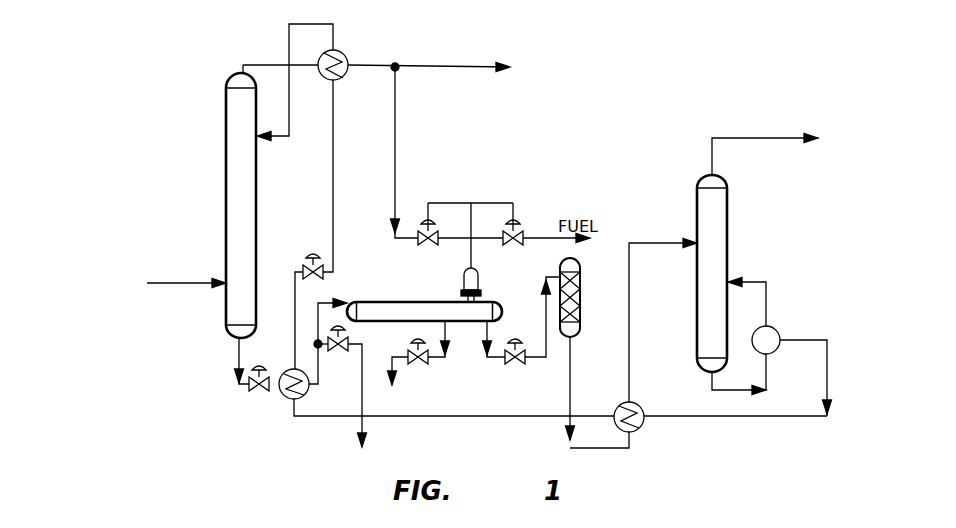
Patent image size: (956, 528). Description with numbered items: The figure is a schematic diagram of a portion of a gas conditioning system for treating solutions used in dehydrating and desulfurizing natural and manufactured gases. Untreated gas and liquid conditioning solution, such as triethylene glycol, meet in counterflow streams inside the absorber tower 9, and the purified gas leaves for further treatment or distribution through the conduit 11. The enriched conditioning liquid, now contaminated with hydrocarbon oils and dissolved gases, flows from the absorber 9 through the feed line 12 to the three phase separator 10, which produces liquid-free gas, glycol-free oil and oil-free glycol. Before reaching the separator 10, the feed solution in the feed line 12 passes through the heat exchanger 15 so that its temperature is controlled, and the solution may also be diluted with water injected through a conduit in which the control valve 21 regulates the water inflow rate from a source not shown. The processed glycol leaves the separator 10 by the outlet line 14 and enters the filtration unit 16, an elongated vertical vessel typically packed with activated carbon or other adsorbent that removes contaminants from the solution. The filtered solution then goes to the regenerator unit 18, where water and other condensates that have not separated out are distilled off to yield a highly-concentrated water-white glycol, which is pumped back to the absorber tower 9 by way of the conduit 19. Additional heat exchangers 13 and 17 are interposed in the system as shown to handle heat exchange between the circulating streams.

The absorber tower 9 is at (257, 190).
The three phase separator 10 is at (378, 297).
The conduit 11 is at (430, 66).
The feed line 12 is at (318, 306).
The heat exchanger 13 is at (340, 78).
The outlet line 14 is at (524, 360).
The heat exchanger 15 is at (306, 394).
The filtration unit 16 is at (572, 259).
The heat exchanger 17 is at (641, 427).
The regenerator unit 18 is at (727, 242).
The conduit 19 is at (289, 100).
The control valve 21 is at (340, 352).